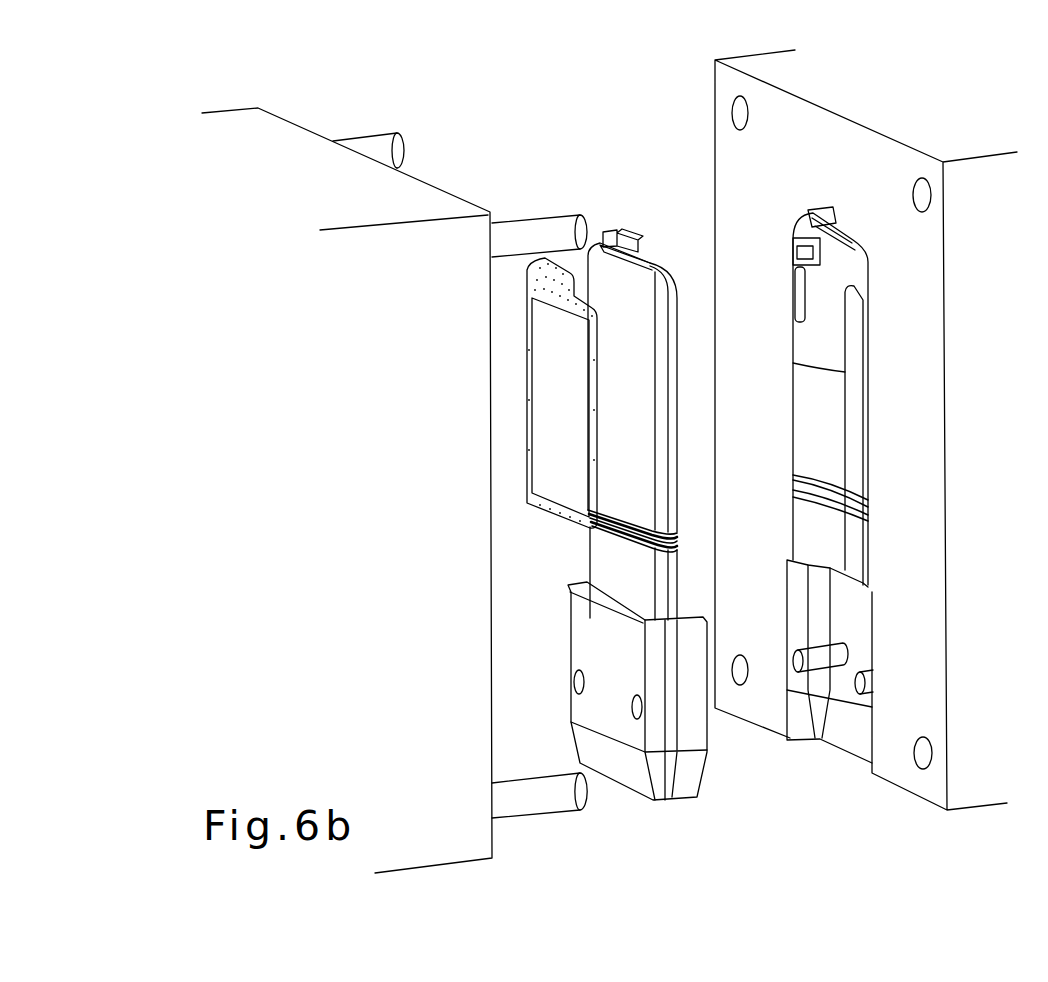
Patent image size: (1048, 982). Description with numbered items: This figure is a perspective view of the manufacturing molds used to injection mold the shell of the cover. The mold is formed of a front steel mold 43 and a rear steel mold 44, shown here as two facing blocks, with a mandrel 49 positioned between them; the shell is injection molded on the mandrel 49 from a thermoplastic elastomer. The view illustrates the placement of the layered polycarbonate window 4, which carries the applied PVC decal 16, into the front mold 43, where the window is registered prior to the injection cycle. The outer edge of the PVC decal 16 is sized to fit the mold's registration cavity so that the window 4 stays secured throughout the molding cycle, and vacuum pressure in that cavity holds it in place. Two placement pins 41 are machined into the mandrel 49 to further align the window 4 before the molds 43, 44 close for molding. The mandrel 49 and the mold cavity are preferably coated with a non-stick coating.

The layered polycarbonate window 4 is at (527, 338).
The PVC decal 16 is at (550, 417).
The placement pins 41 is at (616, 287).
The front steel mold 43 is at (492, 828).
The rear steel mold 44 is at (903, 790).
The mandrel 49 is at (680, 797).